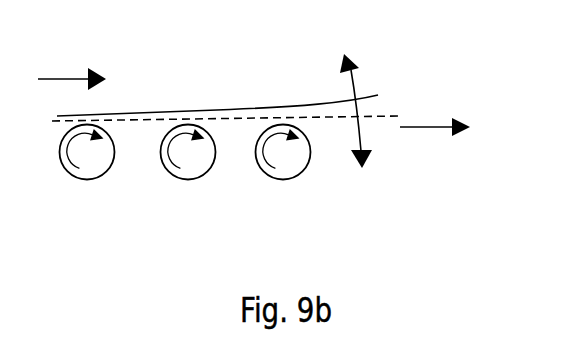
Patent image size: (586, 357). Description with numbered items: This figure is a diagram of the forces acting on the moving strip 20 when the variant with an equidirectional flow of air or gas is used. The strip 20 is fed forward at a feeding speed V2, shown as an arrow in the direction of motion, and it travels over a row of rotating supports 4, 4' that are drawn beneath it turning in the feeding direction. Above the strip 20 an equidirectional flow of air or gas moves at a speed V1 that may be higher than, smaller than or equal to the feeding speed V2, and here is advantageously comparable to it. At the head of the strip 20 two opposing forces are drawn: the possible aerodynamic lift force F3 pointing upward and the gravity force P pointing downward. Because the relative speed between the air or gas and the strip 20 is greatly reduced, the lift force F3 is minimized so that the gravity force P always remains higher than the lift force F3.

The strip 20 is at (213, 112).
The rollers 4 is at (170, 189).
The rollers 4' is at (170, 189).
The feeding speed of the strip V2 is at (72, 65).
The lift force F3 is at (399, 93).
The gravity force P is at (372, 150).
The speed of the equidirectional flow of air or gas V1 is at (481, 112).